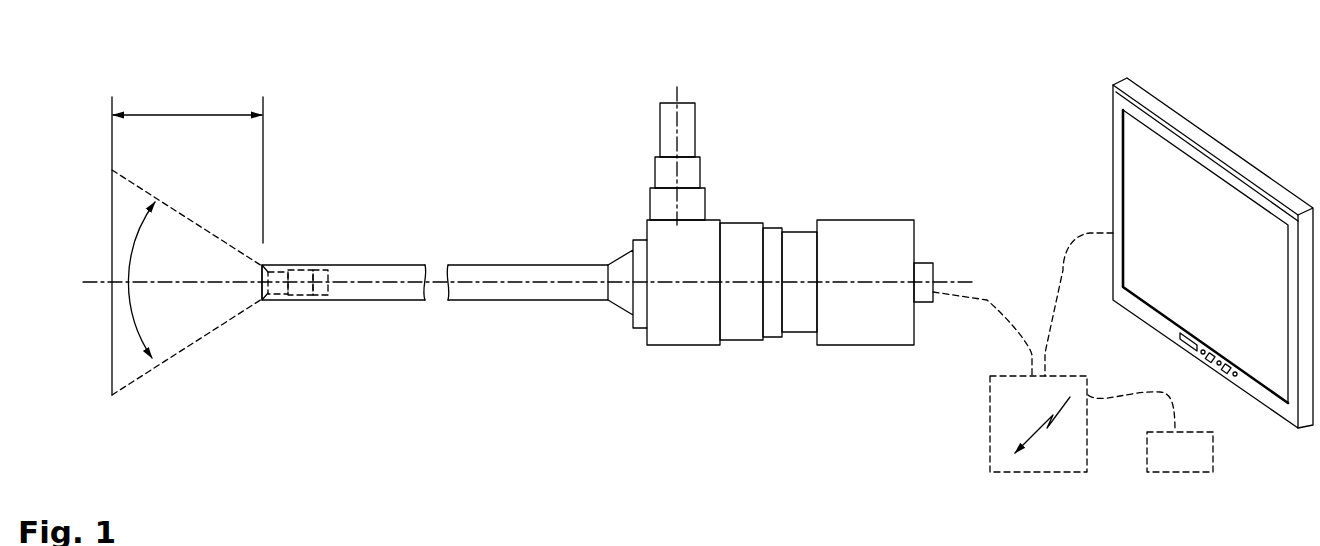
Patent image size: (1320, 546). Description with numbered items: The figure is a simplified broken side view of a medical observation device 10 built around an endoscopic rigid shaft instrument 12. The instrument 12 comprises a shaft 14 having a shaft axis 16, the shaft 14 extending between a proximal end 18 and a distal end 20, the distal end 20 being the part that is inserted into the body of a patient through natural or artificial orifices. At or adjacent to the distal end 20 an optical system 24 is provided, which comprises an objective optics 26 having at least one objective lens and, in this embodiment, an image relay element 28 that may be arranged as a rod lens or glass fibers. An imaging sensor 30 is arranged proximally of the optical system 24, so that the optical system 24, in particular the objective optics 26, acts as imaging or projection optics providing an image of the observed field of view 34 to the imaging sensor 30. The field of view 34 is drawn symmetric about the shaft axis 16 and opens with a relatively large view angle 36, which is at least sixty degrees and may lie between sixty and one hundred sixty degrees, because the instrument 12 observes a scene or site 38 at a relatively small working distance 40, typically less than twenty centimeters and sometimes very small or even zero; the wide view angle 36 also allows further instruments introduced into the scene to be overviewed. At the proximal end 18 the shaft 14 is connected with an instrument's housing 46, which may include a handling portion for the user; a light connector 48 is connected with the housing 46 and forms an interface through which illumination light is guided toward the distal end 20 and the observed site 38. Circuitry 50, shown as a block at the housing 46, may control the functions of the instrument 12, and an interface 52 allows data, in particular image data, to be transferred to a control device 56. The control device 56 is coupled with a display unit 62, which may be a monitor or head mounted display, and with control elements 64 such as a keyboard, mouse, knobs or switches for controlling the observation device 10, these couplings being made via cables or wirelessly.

The observation device 10 is at (488, 118).
The instrument 12 is at (517, 227).
The shaft 14 is at (520, 302).
The shaft axis 16 is at (573, 285).
The proximal end 18 is at (583, 263).
The distal end 20 is at (278, 300).
The optical system 24 is at (338, 325).
The objective optics 26 is at (277, 270).
The image relay element 28 is at (302, 270).
The imaging sensor 30 is at (328, 270).
The field of view 34 is at (197, 342).
The view angle 36 is at (130, 307).
The observed site 38 is at (110, 247).
The working distance 40 is at (180, 112).
The housing 46 is at (687, 345).
The light connector 48 is at (697, 132).
The circuitry 50 is at (880, 220).
The interface 52 is at (935, 268).
The control device 56 is at (990, 412).
The display unit 62 is at (1112, 190).
The control elements 64 is at (1212, 453).